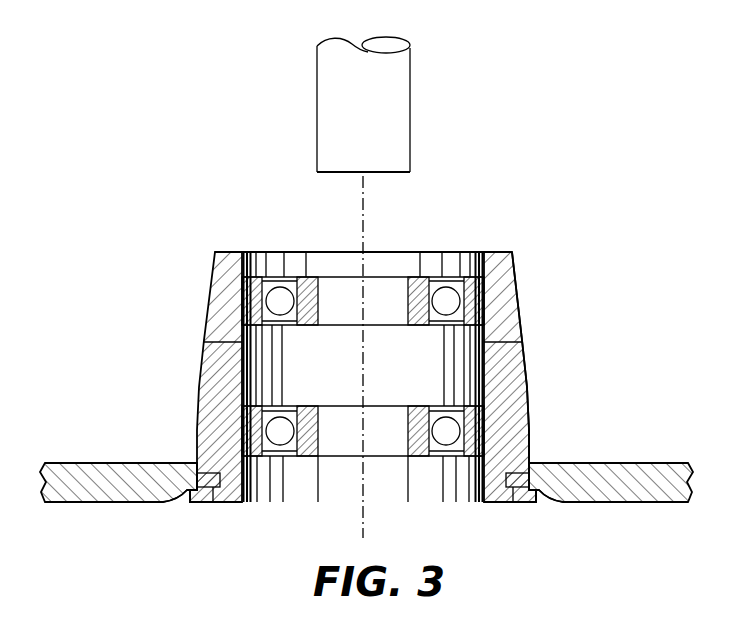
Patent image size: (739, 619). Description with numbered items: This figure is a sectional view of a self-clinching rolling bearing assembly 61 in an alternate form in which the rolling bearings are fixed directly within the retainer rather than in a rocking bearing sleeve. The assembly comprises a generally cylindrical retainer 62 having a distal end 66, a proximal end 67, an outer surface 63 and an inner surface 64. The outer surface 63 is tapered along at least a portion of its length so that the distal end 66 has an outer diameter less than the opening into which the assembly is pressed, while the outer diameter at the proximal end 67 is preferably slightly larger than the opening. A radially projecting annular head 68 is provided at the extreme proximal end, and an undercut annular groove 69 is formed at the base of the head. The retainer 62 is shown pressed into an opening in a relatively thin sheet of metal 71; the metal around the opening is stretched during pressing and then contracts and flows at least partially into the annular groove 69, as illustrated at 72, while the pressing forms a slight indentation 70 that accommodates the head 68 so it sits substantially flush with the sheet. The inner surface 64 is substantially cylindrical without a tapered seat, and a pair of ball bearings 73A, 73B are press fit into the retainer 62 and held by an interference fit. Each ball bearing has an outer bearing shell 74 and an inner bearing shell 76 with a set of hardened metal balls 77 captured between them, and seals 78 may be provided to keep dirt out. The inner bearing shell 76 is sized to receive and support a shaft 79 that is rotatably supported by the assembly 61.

The rolling bearing assembly 61 is at (571, 210).
The retainer 62 is at (533, 362).
The outer surface 63 is at (529, 385).
The inner surface 64 is at (490, 341).
The distal end 66 is at (523, 253).
The proximal end 67 is at (538, 438).
The annular head 68 is at (521, 508).
The annular groove 69 is at (500, 504).
The indentation 70 is at (176, 504).
The sheet of metal 71 is at (619, 504).
The contracted material in groove 72 is at (200, 503).
The ball bearing 73A is at (395, 268).
The ball bearing 73B is at (389, 468).
The outer bearing shell 74 is at (254, 280).
The inner bearing shell 76 is at (306, 280).
The hardened metal balls 77 is at (281, 292).
The seals 78 is at (448, 286).
The shaft 79 is at (380, 90).